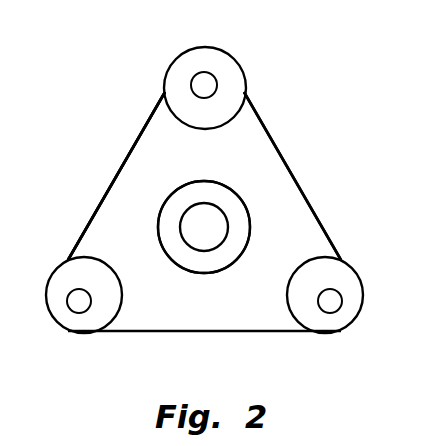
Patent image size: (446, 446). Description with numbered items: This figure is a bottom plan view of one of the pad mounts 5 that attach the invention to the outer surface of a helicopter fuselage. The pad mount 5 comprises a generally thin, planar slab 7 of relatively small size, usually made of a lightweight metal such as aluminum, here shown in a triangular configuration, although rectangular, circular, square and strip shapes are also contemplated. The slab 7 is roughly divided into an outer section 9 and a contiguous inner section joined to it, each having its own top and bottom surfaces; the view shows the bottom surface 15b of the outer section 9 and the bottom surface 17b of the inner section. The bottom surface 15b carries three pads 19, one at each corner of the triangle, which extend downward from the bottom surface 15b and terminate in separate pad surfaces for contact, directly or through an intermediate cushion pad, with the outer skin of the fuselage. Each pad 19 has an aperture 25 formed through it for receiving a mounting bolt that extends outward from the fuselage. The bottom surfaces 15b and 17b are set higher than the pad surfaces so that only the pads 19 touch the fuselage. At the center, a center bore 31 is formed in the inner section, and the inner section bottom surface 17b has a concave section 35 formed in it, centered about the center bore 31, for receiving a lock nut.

The pad mount 5 is at (273, 180).
The planar slab 7 is at (150, 142).
The outer section 9 is at (256, 143).
The bottom surface of outer section 15b is at (114, 208).
The bottom surface of inner section 17b is at (186, 280).
The pad 19 is at (176, 89).
The aperture 25 is at (331, 301).
The center bore 31 is at (210, 242).
The concave section 35 is at (241, 222).